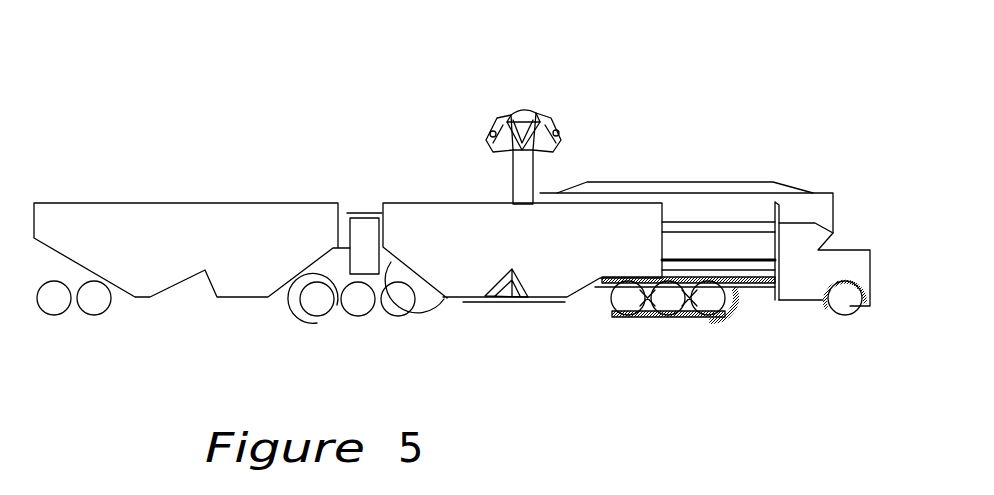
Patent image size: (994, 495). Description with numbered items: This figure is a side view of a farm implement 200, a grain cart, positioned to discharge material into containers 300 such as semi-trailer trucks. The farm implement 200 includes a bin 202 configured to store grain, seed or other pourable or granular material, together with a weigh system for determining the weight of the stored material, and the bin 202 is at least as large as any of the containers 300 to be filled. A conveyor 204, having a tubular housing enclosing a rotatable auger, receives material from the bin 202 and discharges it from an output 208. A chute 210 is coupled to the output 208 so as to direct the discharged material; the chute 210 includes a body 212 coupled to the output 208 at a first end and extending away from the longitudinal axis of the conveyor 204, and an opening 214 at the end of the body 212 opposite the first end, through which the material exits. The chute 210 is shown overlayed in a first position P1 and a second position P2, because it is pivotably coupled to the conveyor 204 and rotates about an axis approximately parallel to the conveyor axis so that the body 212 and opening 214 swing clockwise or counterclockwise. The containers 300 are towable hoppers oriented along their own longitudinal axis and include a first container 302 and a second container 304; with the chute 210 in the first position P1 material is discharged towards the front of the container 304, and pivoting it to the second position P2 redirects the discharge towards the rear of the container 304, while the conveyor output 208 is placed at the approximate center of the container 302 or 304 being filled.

The farm implement 200 is at (544, 120).
The bin 202 is at (710, 183).
The conveyor 204 is at (513, 163).
The output 208 is at (535, 151).
The chute 210 is at (517, 112).
The body 212 is at (510, 118).
The opening 214 is at (487, 141).
The first position P1 is at (557, 140).
The second position P2 is at (490, 133).
The containers 300 is at (888, 322).
The first container 302 is at (162, 272).
The second container 304 is at (577, 275).